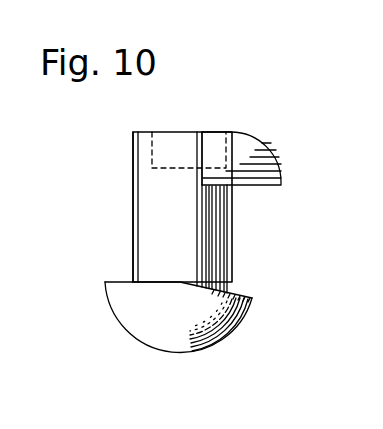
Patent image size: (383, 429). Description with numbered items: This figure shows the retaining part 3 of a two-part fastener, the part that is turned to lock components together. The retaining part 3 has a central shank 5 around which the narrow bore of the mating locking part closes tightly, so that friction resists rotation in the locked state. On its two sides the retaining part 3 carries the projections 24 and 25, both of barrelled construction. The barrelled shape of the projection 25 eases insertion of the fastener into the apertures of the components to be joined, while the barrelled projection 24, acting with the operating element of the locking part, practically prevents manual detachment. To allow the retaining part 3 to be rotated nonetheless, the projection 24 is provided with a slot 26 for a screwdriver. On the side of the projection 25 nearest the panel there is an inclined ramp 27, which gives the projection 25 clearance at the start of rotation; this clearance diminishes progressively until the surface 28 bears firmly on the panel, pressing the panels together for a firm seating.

The retaining part 3 is at (128, 165).
The shank 5 is at (108, 207).
The projection 24 is at (243, 158).
The projection 25 is at (135, 322).
The slot 26 is at (182, 152).
The ramp 27 is at (241, 296).
The surface 28 is at (127, 281).